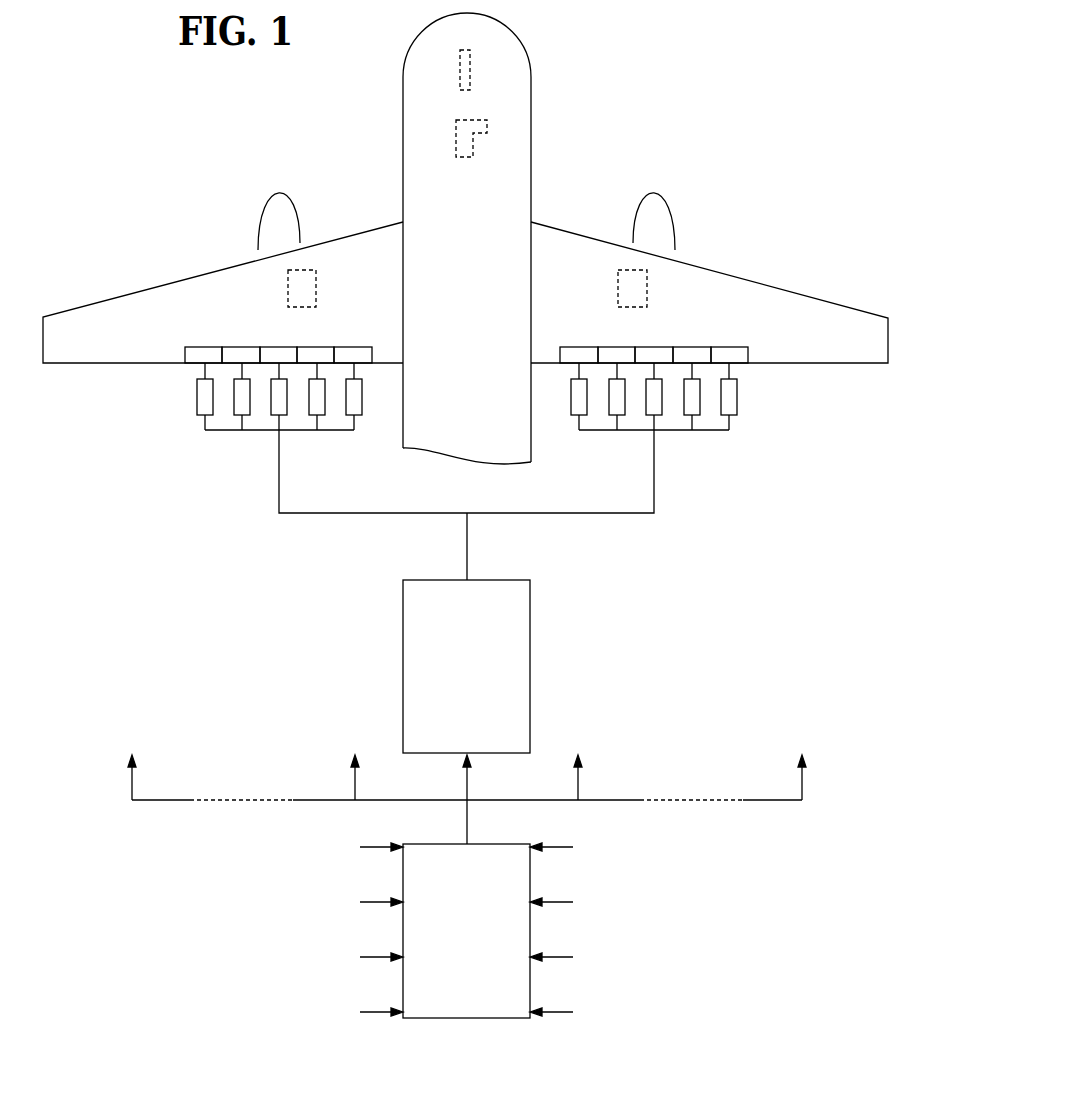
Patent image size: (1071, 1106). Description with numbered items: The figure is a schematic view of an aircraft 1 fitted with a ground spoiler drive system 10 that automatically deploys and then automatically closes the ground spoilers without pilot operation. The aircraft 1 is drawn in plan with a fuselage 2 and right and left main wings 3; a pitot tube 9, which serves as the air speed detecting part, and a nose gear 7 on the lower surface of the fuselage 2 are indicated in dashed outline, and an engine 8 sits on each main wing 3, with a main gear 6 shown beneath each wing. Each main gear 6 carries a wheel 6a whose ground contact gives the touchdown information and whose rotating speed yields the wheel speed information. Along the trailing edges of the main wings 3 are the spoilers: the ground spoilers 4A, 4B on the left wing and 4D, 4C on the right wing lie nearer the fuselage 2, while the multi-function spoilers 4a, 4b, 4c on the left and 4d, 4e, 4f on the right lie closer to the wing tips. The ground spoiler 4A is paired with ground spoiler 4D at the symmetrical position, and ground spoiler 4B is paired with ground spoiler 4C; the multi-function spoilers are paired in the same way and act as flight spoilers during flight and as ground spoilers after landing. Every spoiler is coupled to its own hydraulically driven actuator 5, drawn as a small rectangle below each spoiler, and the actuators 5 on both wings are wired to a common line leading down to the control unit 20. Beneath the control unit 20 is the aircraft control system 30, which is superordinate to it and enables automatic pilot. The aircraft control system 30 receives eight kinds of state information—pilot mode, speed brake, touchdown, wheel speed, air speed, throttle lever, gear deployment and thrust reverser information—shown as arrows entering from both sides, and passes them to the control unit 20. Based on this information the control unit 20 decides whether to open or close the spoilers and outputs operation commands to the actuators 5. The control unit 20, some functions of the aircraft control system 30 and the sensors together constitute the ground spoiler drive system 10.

The aircraft 1 is at (465, 296).
The fuselage 2 is at (531, 166).
The main wing 3 is at (198, 277).
The multi-function spoiler 4a is at (197, 347).
The multi-function spoiler 4b is at (240, 347).
The multi-function spoiler 4c is at (280, 347).
The ground spoiler 4A is at (320, 347).
The ground spoiler 4B is at (358, 347).
The ground spoiler 4C is at (615, 347).
The ground spoiler 4D is at (575, 347).
The multi-function spoiler 4d is at (653, 347).
The multi-function spoiler 4e is at (695, 347).
The multi-function spoiler 4f is at (735, 347).
The actuator 5 is at (197, 397).
The main gear 6 is at (302, 270).
The wheel 6a is at (632, 270).
The nose gear 7 is at (486, 126).
The engine 8 is at (258, 226).
The pitot tube 9 is at (472, 86).
The ground spoiler drive system 10 is at (467, 814).
The control unit 20 is at (466, 666).
The aircraft control system 30 is at (466, 931).